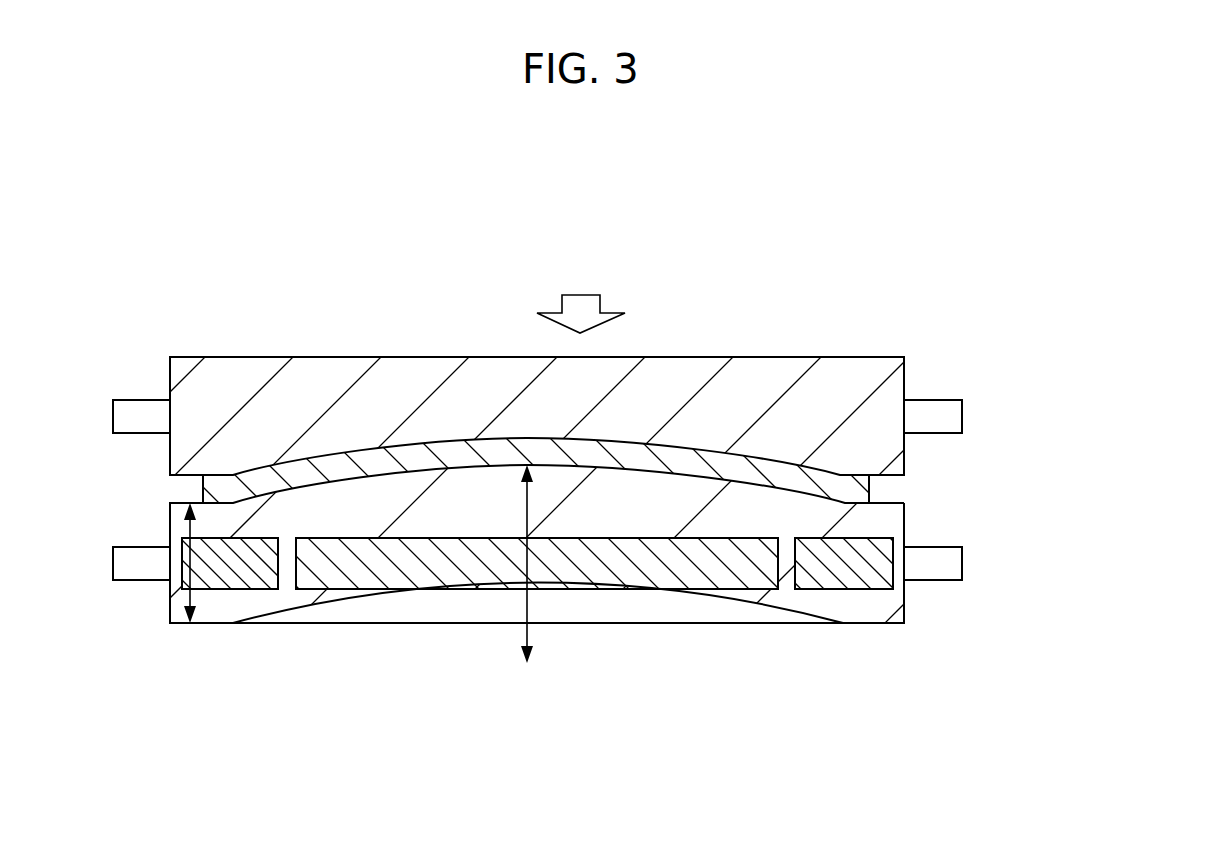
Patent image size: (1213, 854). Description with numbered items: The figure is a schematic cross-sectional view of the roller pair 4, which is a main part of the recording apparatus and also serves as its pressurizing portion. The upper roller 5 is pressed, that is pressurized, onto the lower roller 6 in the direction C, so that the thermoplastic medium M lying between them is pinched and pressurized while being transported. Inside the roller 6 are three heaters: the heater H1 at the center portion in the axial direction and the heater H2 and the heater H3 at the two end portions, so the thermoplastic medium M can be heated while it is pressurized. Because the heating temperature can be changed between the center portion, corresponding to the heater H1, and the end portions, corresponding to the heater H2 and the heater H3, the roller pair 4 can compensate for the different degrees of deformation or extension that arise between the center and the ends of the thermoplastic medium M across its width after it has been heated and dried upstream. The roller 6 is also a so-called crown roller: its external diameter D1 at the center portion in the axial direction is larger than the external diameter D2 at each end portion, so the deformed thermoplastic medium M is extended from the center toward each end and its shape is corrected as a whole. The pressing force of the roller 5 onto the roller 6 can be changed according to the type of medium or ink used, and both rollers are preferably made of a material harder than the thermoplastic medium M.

The roller pair 4 is at (1118, 353).
The roller 5 is at (920, 373).
The roller 6 is at (923, 618).
The thermoplastic medium M is at (528, 450).
The direction C is at (581, 296).
The heater H1 is at (592, 572).
The heater H2 is at (237, 572).
The heater H3 is at (857, 572).
The external diameter D1 is at (527, 618).
The external diameter D2 is at (182, 595).